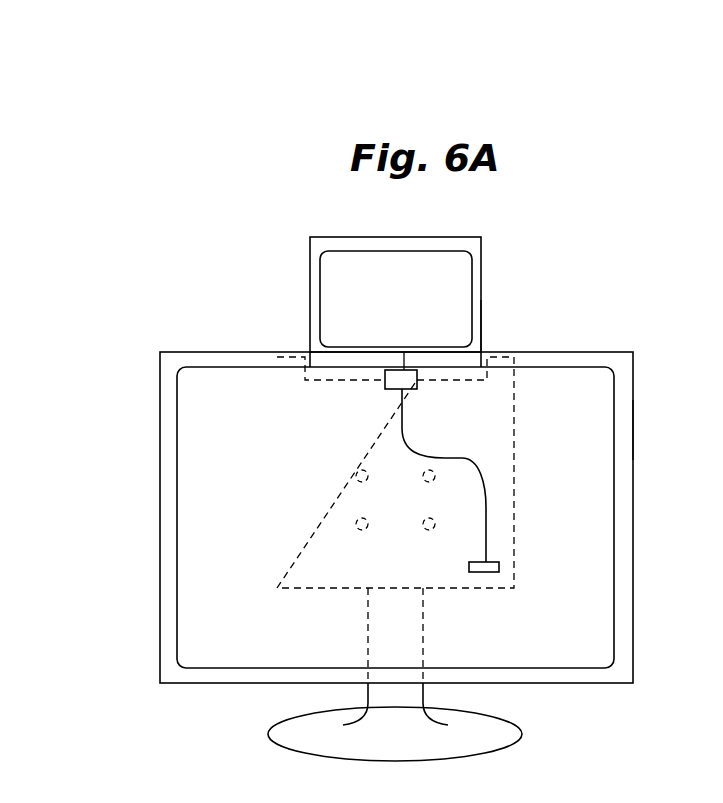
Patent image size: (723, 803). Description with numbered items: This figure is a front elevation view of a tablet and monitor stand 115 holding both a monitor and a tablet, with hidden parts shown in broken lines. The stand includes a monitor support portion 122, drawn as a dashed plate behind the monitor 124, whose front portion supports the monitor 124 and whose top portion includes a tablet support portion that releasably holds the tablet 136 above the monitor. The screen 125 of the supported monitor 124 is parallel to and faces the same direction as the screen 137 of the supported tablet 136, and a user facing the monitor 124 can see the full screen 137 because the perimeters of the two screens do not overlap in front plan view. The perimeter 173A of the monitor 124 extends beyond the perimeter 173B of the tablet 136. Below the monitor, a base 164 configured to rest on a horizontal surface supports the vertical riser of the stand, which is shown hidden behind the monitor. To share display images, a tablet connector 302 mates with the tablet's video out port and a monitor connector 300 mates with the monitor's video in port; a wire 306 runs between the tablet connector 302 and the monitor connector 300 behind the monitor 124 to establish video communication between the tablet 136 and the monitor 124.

The tablet and monitor stand 115 is at (556, 229).
The monitor support portion 122 is at (520, 412).
The monitor 124 is at (158, 373).
The screen 125 is at (192, 592).
The tablet 136 is at (310, 275).
The screen 137 is at (385, 277).
The base 164 is at (493, 730).
The perimeter 173A is at (633, 428).
The perimeter 173B is at (483, 322).
The monitor connector 300 is at (500, 574).
The tablet connector 302 is at (413, 343).
The wire 306 is at (487, 507).